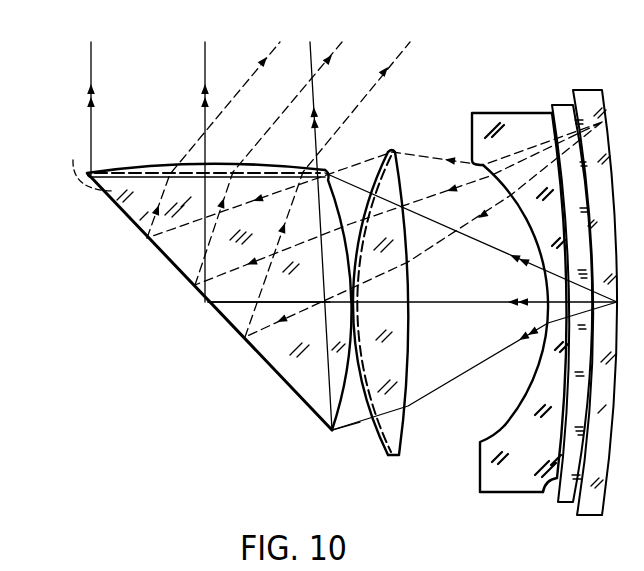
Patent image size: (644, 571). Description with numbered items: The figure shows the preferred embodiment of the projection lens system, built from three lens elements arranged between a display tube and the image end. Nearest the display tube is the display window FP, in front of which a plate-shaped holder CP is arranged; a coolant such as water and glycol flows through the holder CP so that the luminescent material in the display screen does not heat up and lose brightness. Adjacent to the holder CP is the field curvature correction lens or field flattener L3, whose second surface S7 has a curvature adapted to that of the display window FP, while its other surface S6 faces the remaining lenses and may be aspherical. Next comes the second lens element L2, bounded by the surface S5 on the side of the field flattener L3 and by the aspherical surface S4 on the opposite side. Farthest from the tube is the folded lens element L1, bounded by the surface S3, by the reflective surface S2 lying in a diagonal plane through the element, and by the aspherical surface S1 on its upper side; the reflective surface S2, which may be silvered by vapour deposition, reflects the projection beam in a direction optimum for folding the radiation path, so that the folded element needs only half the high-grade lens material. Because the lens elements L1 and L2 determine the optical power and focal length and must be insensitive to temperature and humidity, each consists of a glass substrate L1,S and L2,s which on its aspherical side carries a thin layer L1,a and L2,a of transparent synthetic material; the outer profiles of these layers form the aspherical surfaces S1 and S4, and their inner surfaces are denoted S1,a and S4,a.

The folded lens element L1 is at (197, 222).
The aspherical outer profile of thin layer L1,a S1 is at (107, 171).
The inner surface of thin layer L1,a S1,a is at (77, 165).
The thin layer of transparent synthetic material L1,a is at (161, 171).
The reflective surface S2 is at (166, 262).
The surface of lens element L1 S3 is at (343, 384).
The glass substrate L1,S is at (235, 294).
The second lens element L2 is at (391, 135).
The aspherical outer profile of thin layer L2,a S4 is at (381, 444).
The inner surface of thin layer L2,a S4,a is at (374, 430).
The surface of lens element L2 S5 is at (405, 429).
The thin layer of transparent synthetic material L2,a is at (342, 431).
The glass substrate L2,s is at (395, 351).
The field curvature correction lens (field flattener) L3 is at (520, 302).
The surface of lens element L3 S6 is at (505, 425).
The second surface of lens element L3 S7 is at (545, 490).
The plate-shaped holder CP is at (568, 503).
The display window FP is at (592, 505).